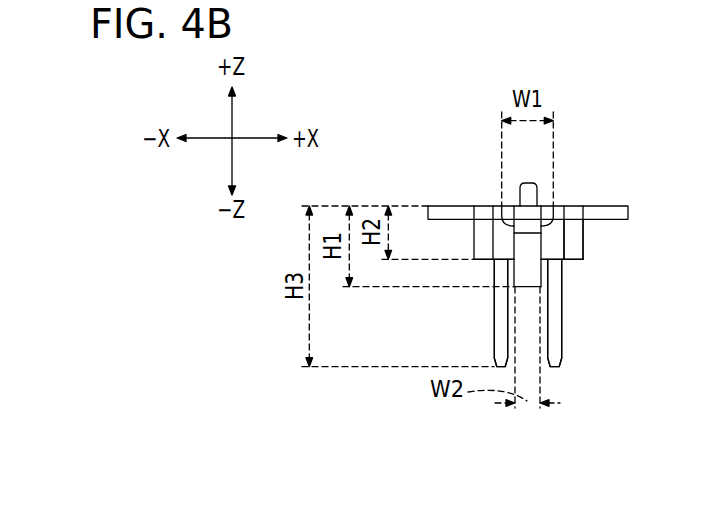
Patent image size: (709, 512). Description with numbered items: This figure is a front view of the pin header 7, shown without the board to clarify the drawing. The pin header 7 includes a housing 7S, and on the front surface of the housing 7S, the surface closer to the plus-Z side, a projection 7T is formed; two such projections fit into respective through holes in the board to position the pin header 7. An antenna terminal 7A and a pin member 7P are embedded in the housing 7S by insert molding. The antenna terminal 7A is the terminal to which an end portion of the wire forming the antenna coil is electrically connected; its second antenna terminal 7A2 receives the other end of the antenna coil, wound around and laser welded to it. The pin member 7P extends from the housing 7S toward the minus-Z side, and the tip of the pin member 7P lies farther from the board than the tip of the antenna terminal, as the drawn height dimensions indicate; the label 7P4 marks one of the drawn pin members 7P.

The pin header 7 is at (524, 225).
The projection 7T is at (533, 198).
The housing 7S is at (577, 248).
The antenna terminal 7A is at (510, 265).
The second antenna terminal 7A2 is at (508, 268).
The pin member 7P is at (562, 365).
The fourth press-fit pin portion 7P4 is at (562, 365).